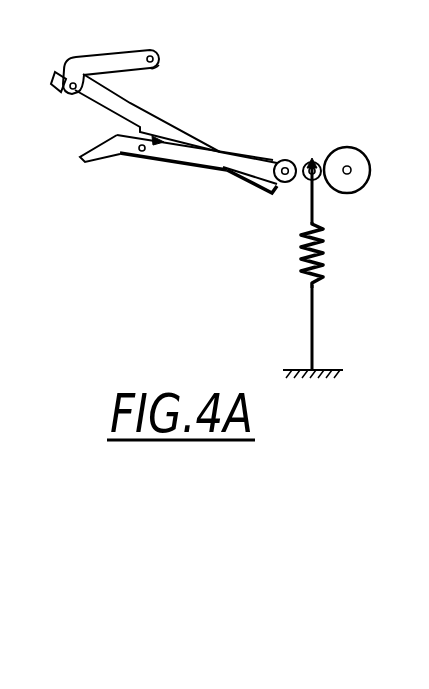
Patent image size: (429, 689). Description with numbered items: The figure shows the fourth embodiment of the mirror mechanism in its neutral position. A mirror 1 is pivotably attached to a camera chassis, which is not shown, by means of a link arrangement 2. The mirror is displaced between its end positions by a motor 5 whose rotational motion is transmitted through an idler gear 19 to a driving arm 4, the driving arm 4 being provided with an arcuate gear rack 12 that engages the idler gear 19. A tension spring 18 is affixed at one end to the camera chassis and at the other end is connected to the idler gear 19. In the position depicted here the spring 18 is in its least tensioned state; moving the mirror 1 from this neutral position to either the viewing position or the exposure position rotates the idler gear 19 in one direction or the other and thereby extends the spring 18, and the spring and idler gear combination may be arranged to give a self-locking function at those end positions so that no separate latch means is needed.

The mirror 1 is at (173, 127).
The link arrangement 2 is at (158, 73).
The driving arm 4 is at (168, 160).
The motor 5 is at (344, 147).
The arcuate gear rack 12 is at (285, 159).
The tension spring 18 is at (314, 310).
The idler gear 19 is at (304, 162).